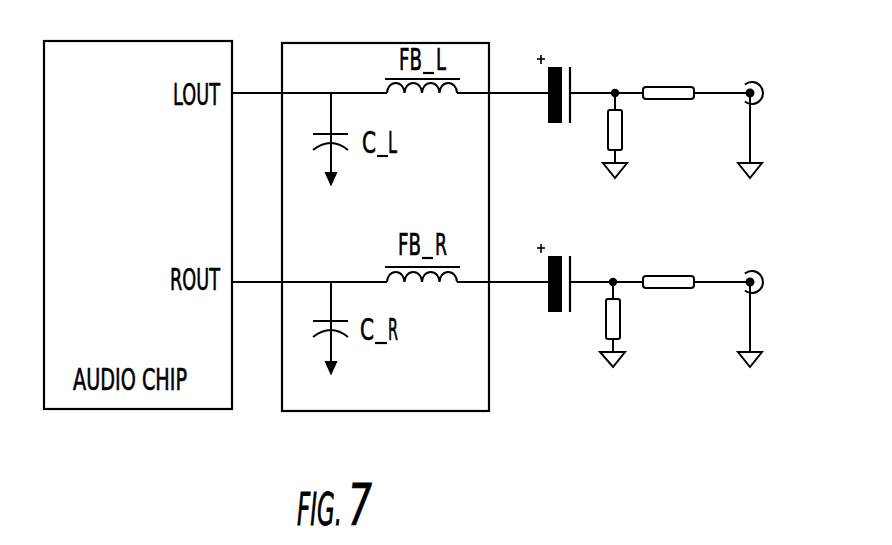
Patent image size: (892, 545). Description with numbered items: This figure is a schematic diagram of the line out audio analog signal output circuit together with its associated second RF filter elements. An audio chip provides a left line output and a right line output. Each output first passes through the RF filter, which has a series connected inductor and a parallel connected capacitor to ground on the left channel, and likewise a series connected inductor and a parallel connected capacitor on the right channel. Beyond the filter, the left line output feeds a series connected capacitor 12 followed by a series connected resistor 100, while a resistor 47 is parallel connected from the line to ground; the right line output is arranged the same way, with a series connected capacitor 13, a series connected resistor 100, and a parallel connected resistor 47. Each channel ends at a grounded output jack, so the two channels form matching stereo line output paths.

The left channel output coupling capacitor (1 μF) 12 is at (545, 106).
The right channel output coupling capacitor (1 μF) 13 is at (545, 294).
The 100 ohm series output resistor 100 is at (675, 170).
The 47 kohm shunt resistor to ground 47 is at (645, 227).